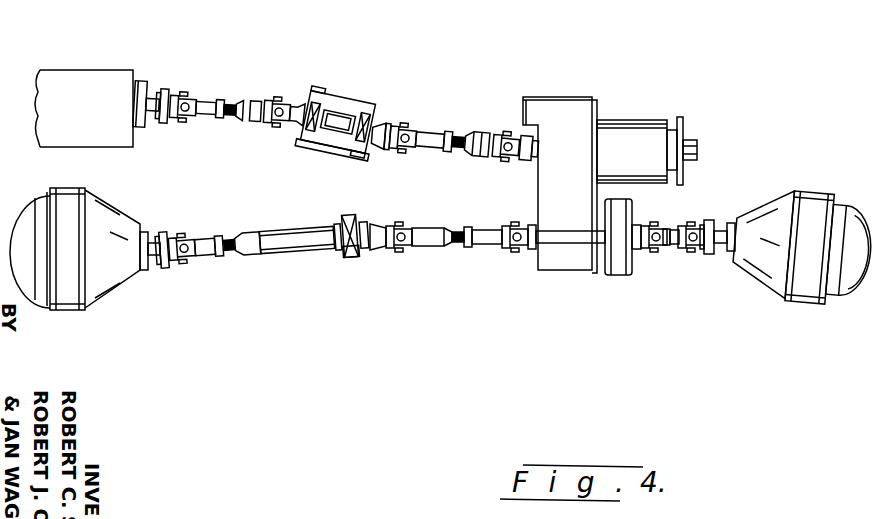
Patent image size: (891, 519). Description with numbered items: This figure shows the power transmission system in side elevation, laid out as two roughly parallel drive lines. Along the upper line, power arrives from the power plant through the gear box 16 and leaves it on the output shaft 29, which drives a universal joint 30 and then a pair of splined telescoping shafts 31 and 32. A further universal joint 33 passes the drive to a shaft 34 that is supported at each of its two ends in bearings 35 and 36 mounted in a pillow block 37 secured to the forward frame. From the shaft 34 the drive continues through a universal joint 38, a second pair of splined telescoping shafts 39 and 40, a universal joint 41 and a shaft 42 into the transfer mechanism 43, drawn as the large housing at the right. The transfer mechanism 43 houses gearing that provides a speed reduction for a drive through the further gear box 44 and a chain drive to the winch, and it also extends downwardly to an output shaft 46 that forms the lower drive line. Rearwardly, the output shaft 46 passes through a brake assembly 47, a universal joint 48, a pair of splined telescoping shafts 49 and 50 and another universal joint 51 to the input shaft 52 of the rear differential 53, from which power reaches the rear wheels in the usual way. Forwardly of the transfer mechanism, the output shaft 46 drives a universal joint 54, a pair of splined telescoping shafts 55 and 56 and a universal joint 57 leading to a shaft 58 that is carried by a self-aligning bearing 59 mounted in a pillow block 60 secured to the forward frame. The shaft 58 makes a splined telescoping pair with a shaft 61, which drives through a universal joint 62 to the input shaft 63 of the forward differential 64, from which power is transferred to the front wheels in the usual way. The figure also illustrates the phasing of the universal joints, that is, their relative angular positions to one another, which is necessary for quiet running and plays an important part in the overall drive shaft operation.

The gear box 16 is at (75, 79).
The output shaft 29 is at (154, 93).
The universal joint 30 is at (180, 88).
The splined telescoping shaft 31 is at (207, 115).
The splined telescoping shaft 32 is at (232, 105).
The universal joint 33 is at (280, 103).
The shaft 34 is at (340, 122).
The bearing 35 is at (318, 103).
The bearing 36 is at (365, 123).
The pillow block 37 is at (330, 147).
The universal joint 38 is at (405, 128).
The splined telescoping shaft 39 is at (432, 136).
The splined telescoping shaft 40 is at (490, 137).
The universal joint 41 is at (505, 136).
The shaft 42 is at (531, 160).
The transfer mechanism 43 is at (575, 101).
The further gear box 44 is at (653, 127).
The output shaft 46 is at (600, 236).
The brake assembly 47 is at (619, 278).
The universal joint 48 is at (652, 237).
The splined telescoping shaft 49 is at (669, 248).
The splined telescoping shaft 50 is at (703, 228).
The universal joint 51 is at (697, 258).
The input shaft 52 is at (724, 230).
The rear differential 53 is at (816, 194).
The universal joint 54 is at (516, 252).
The splined telescoping shaft 55 is at (485, 245).
The splined telescoping shaft 56 is at (458, 243).
The universal joint 57 is at (393, 224).
The shaft 58 is at (278, 252).
The self-aligning bearing 59 is at (350, 219).
The pillow block 60 is at (352, 260).
The shaft 61 is at (208, 242).
The universal joint 62 is at (177, 264).
The input shaft 63 is at (152, 242).
The forward differential 64 is at (72, 308).